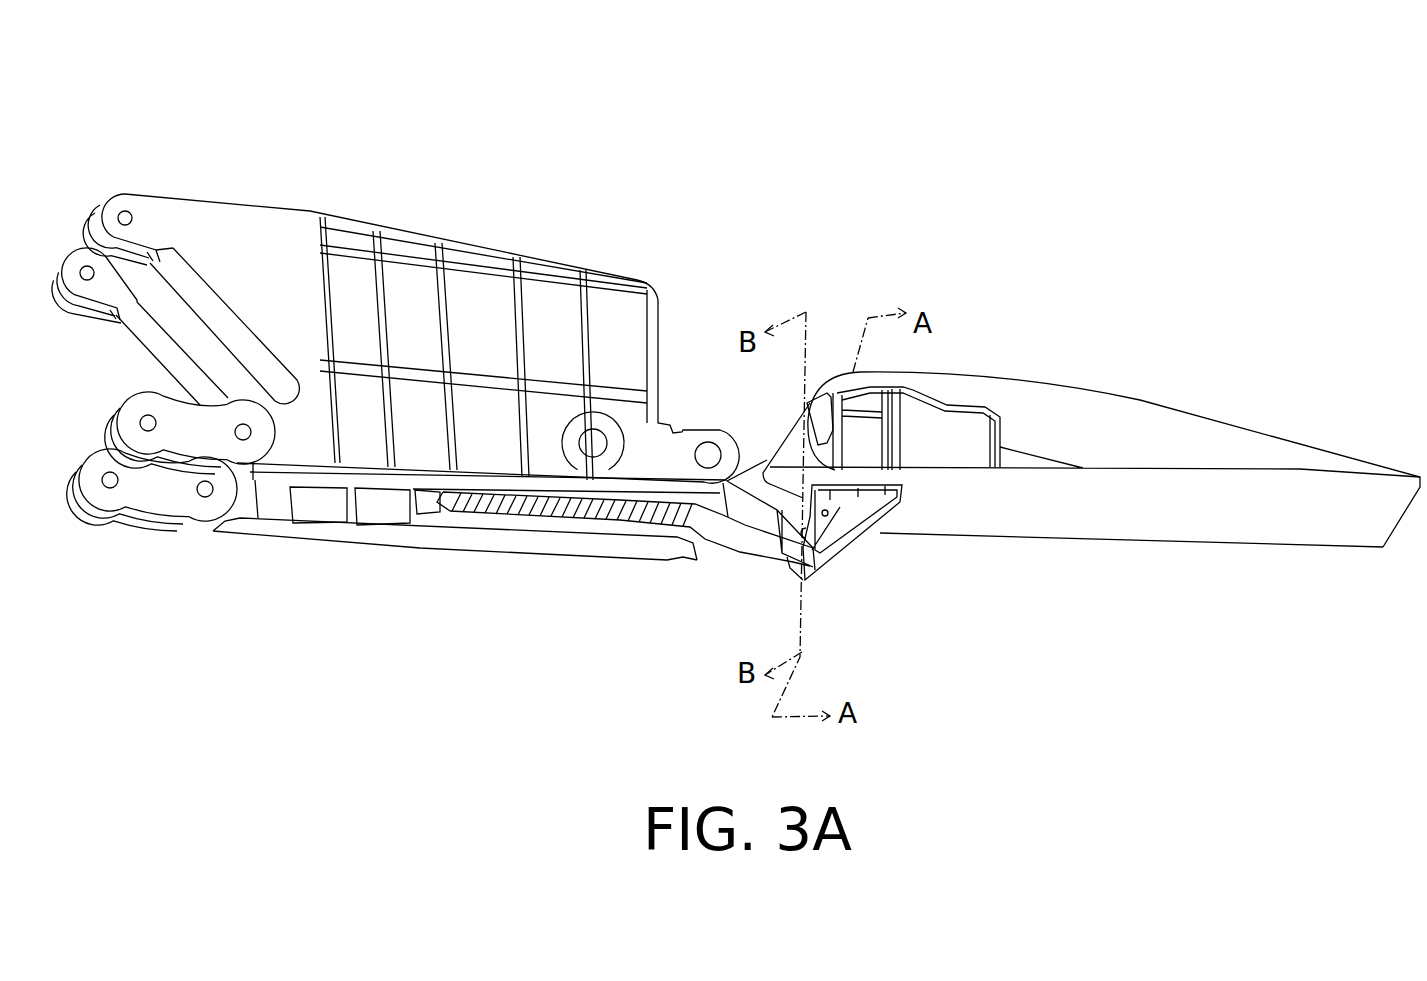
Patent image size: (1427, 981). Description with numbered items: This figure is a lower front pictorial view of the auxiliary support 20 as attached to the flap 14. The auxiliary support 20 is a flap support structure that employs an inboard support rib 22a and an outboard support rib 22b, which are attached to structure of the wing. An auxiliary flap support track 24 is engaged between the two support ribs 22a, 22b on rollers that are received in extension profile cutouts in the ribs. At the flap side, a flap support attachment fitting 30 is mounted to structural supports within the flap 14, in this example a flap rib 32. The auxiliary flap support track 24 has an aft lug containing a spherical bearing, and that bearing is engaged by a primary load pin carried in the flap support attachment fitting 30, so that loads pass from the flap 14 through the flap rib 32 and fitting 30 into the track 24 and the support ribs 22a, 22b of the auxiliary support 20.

The auxiliary support 20 is at (452, 391).
The inboard support rib 22a is at (360, 540).
The outboard support rib 22b is at (477, 428).
The auxiliary flap support track 24 is at (735, 538).
The flap support attachment fitting 30 is at (860, 533).
The flap rib 32 is at (858, 442).
The flap 14 is at (1091, 459).